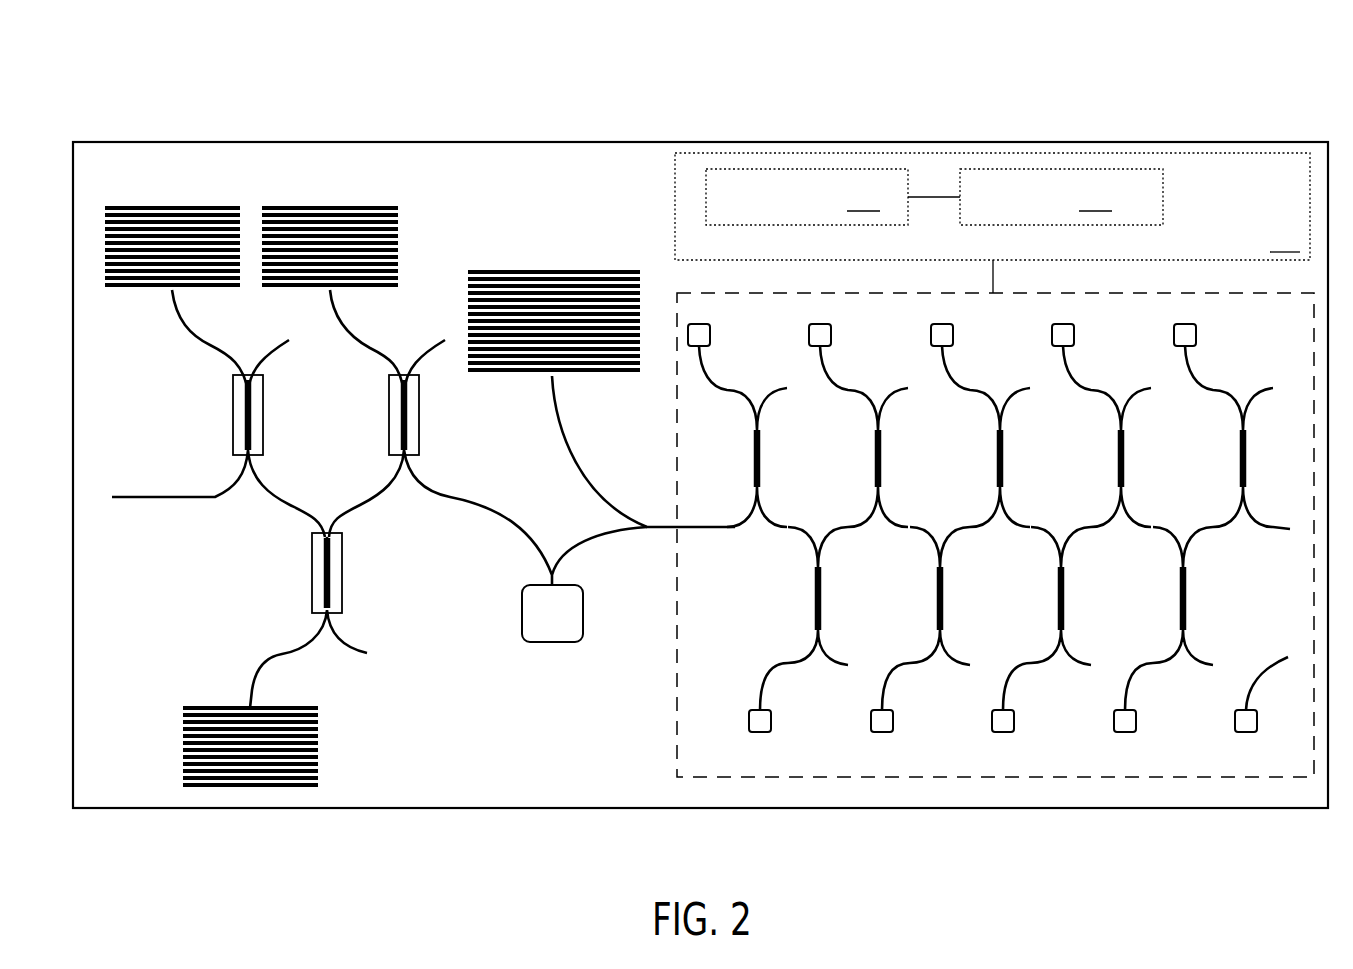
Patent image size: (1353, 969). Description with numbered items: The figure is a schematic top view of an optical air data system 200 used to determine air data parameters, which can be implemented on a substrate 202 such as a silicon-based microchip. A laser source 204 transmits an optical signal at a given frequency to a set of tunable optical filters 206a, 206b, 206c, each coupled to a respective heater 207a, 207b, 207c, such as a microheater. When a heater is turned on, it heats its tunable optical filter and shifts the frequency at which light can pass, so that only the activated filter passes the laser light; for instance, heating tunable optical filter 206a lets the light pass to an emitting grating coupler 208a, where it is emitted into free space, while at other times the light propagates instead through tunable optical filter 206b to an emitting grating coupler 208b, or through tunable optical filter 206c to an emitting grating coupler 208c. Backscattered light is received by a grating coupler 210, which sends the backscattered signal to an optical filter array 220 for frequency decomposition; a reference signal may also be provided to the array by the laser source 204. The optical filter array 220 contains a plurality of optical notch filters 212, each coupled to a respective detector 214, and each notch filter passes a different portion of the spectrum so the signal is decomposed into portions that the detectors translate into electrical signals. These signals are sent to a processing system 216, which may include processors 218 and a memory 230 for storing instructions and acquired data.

The optical air data system 200 is at (1137, 95).
The substrate 202 is at (372, 808).
The laser source 204 is at (540, 645).
The tunable optical filter 206a is at (421, 432).
The tunable optical filter 206b is at (334, 588).
The tunable optical filter 206c is at (256, 392).
The heater 207a is at (388, 402).
The heater 207b is at (310, 557).
The heater 207c is at (232, 412).
The emitting grating coupler 208a is at (316, 206).
The emitting grating coupler 208b is at (233, 790).
The emitting grating coupler 208c is at (170, 206).
The grating coupler 210 is at (553, 270).
The optical notch filter 212 is at (763, 446).
The detector 214 is at (1003, 733).
The processing system 216 is at (992, 223).
The processors 218 is at (807, 197).
The optical filter array 220 is at (1100, 777).
The memory 230 is at (1061, 197).